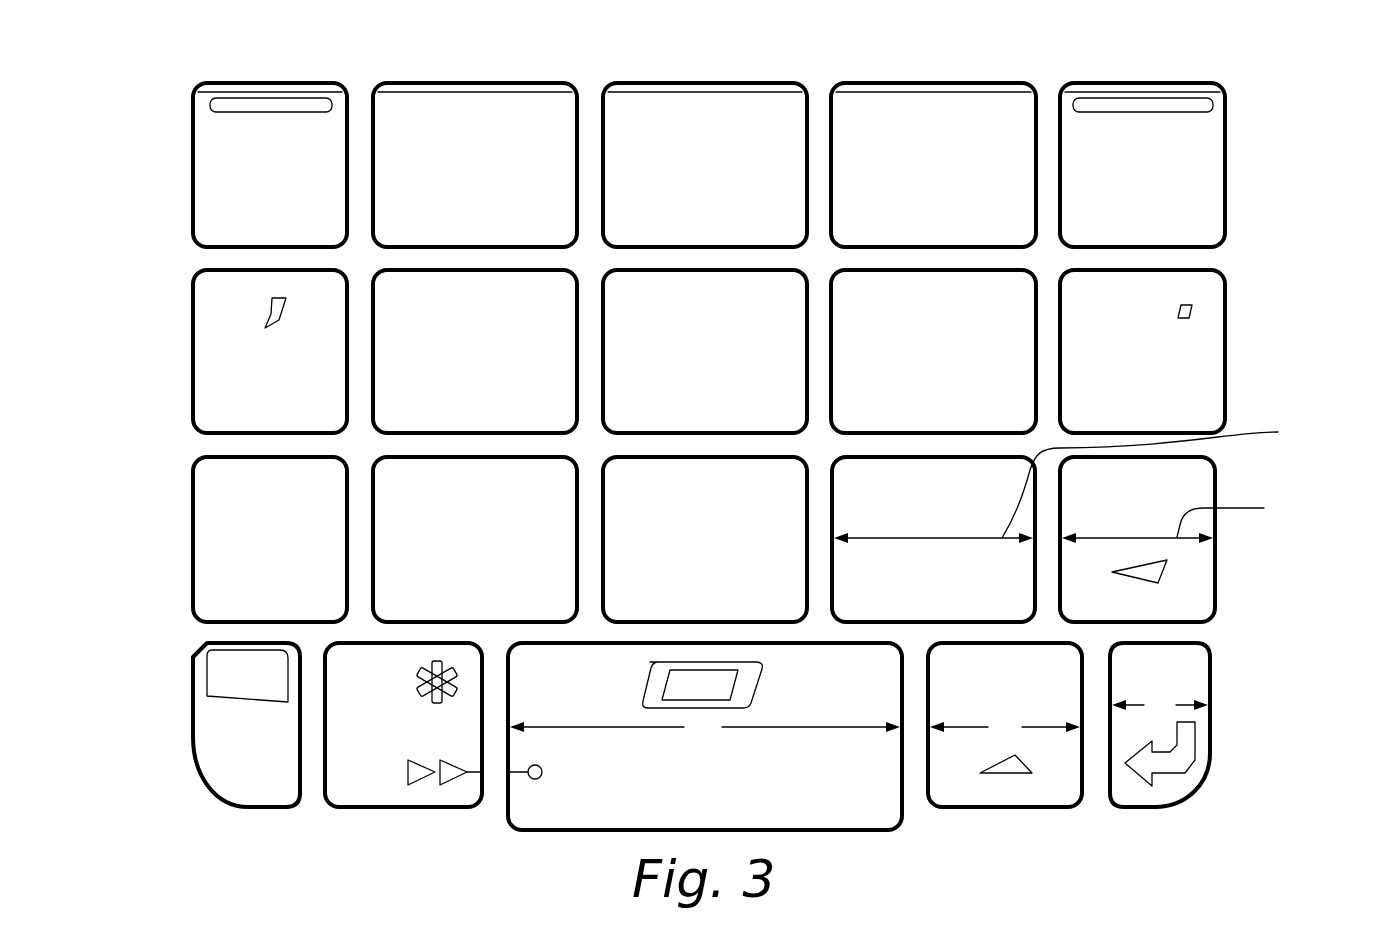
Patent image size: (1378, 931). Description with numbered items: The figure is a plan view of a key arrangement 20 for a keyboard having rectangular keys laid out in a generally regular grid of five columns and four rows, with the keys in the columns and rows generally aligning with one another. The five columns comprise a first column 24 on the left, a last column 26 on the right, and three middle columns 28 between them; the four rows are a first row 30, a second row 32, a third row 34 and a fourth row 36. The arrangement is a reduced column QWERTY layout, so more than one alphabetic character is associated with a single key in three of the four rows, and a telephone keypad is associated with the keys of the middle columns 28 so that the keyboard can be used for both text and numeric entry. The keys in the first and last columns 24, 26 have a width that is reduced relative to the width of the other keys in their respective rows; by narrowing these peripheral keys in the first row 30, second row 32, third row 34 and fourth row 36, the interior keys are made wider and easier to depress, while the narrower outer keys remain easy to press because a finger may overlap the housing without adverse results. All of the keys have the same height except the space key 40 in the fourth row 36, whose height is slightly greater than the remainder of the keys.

The key arrangement 20 is at (1308, 143).
The first column 24 is at (272, 83).
The last column 26 is at (1150, 83).
The middle columns 28 is at (485, 83).
The first row 30 is at (192, 181).
The second row 32 is at (192, 356).
The third row 34 is at (192, 529).
The fourth row 36 is at (192, 722).
The space key 40 is at (565, 822).